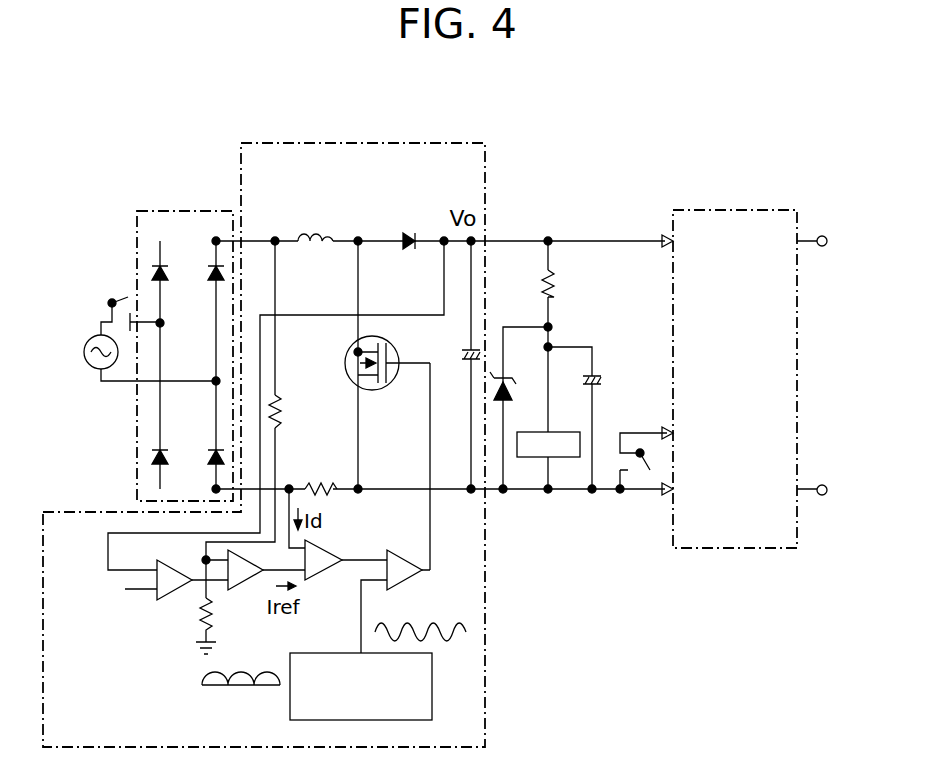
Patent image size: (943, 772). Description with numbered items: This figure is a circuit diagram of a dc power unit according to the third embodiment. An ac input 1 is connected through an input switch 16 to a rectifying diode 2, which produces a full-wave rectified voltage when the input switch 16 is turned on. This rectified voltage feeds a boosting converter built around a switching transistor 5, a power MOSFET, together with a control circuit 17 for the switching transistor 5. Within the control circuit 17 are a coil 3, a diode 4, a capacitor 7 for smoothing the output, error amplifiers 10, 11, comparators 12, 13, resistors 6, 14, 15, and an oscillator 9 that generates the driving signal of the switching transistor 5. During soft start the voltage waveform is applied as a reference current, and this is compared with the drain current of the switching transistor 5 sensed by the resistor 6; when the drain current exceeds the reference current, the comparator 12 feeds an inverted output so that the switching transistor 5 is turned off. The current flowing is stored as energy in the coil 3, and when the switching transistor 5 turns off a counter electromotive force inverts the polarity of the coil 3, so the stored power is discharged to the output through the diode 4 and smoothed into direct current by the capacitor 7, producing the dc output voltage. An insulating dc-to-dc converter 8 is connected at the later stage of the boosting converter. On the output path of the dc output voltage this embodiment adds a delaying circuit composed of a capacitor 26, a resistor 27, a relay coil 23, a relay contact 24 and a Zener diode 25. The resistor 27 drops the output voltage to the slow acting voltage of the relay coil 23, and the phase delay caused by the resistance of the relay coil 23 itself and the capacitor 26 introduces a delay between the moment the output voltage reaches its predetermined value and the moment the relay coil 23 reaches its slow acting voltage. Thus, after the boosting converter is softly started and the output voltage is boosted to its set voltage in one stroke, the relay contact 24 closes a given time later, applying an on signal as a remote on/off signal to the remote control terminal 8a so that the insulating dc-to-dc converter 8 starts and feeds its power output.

The ac input 1 is at (95, 372).
The rectifying diode 2 is at (190, 208).
The coil 3 is at (318, 238).
The diode 4 is at (407, 238).
The switching transistor 5 is at (355, 350).
The resistor 6 is at (318, 485).
The capacitor 7 is at (470, 365).
The insulating dc-to-dc converter 8 is at (738, 208).
The remote control terminal 8a is at (635, 430).
The oscillator 9 is at (290, 700).
The error amplifier 10 is at (150, 595).
The error amplifier 11 is at (242, 585).
The comparator 12 is at (323, 572).
The comparator 13 is at (408, 553).
The resistor 14 is at (282, 408).
The resistor 15 is at (195, 625).
The input switch 16 is at (128, 297).
The control circuit 17 is at (487, 590).
The relay coil 23 is at (548, 430).
The relay contact 24 is at (646, 480).
The Zener diode 25 is at (510, 380).
The capacitor 26 is at (597, 372).
The resistor 27 is at (553, 273).